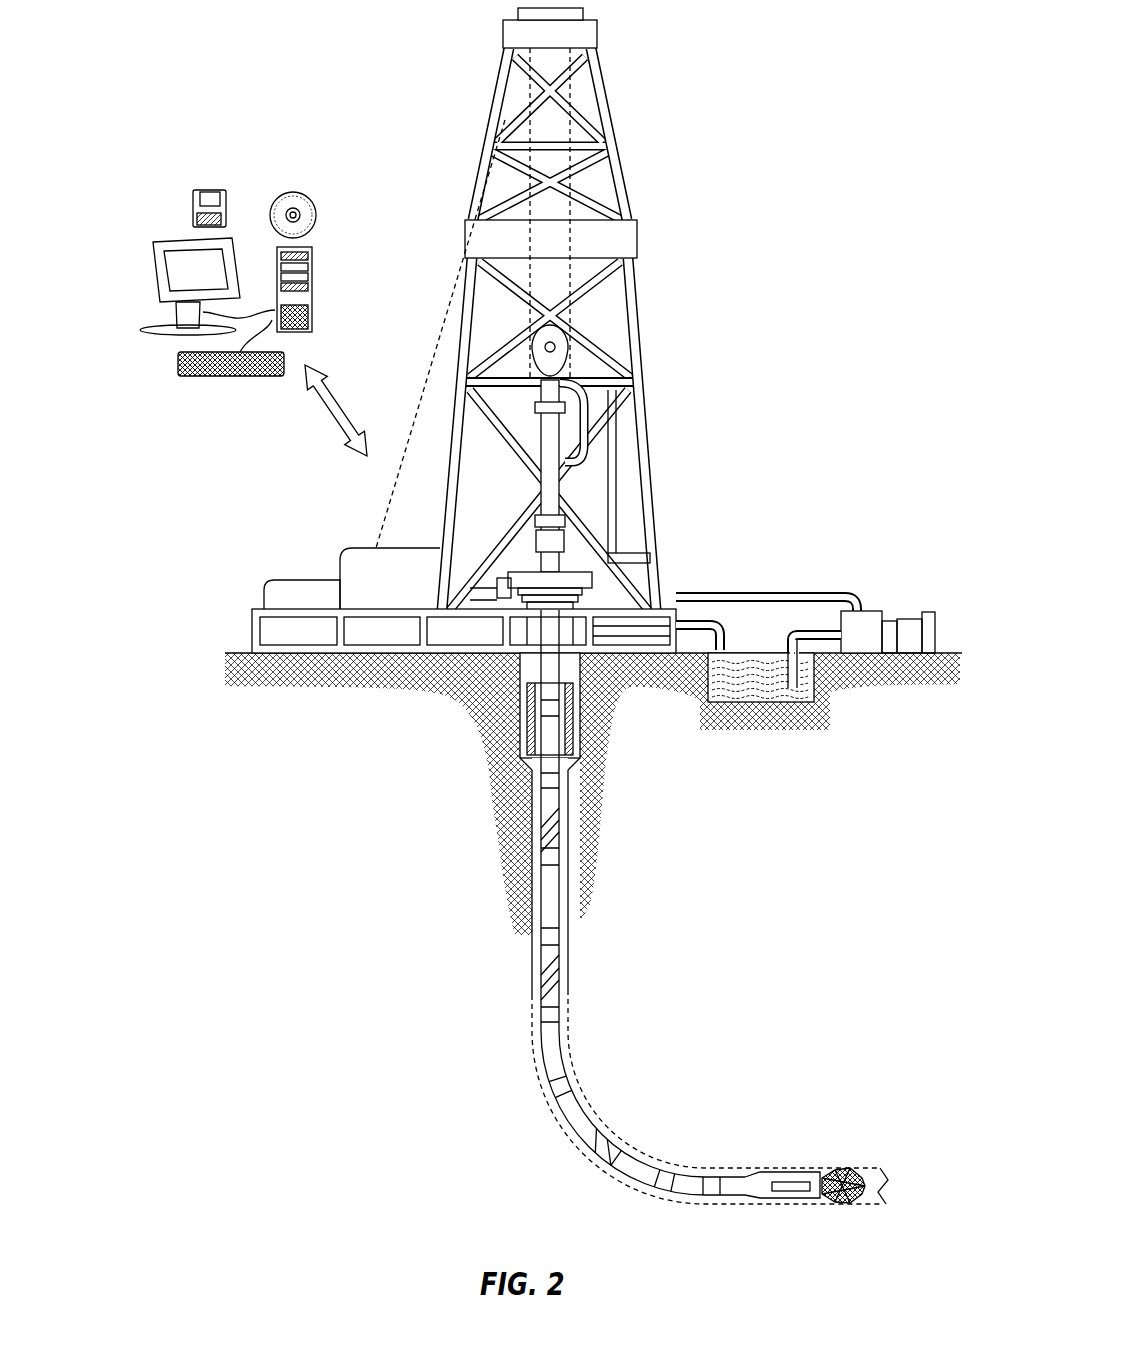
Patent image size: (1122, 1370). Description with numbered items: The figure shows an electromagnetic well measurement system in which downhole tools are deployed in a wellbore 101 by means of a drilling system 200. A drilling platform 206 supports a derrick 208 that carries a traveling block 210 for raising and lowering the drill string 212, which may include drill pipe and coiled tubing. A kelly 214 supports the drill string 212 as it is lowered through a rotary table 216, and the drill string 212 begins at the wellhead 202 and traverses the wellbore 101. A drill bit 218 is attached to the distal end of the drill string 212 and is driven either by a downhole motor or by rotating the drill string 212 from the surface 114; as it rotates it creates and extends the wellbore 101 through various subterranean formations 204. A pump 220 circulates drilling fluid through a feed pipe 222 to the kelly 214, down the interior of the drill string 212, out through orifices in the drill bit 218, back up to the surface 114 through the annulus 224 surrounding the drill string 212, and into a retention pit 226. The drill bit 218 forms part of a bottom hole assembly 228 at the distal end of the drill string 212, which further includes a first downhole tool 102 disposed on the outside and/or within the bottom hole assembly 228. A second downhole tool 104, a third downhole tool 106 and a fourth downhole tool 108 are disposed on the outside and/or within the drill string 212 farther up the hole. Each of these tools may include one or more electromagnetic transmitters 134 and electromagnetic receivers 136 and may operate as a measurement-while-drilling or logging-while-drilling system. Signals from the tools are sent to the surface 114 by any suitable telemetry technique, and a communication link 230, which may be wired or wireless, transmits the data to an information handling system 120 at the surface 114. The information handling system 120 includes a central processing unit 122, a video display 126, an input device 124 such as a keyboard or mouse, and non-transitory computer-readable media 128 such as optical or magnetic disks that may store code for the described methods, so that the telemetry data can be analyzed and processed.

The drilling system 200 is at (571, 399).
The derrick 208 is at (612, 165).
The traveling block 210 is at (572, 352).
The kelly 214 is at (553, 432).
The rotary table 216 is at (585, 572).
The wellhead 202 is at (596, 598).
The drilling platform 206 is at (252, 632).
The feed pipe 222 is at (790, 594).
The pump 220 is at (858, 612).
The retention pit 226 is at (755, 690).
The surface 114 is at (945, 653).
The subterranean formations 204 is at (797, 954).
The annulus 224 is at (530, 857).
The wellbore 101 is at (567, 853).
The drill string 212 is at (566, 830).
The fourth downhole tool 108 is at (592, 902).
The third downhole tool 106 is at (552, 977).
The second downhole tool 104 is at (588, 1130).
The electromagnetic transmitter 134 is at (547, 817).
The electromagnetic receiver 136 is at (547, 835).
The bottom hole assembly 228 is at (767, 1174).
The first downhole tool 102 is at (790, 1192).
The drill bit 218 is at (850, 1172).
The information handling system 120 is at (225, 283).
The non-transitory computer-readable media 128 is at (290, 192).
The video display 126 is at (157, 278).
The central processing unit 122 is at (313, 257).
The input device 124 is at (188, 378).
The communication link 230 is at (325, 415).